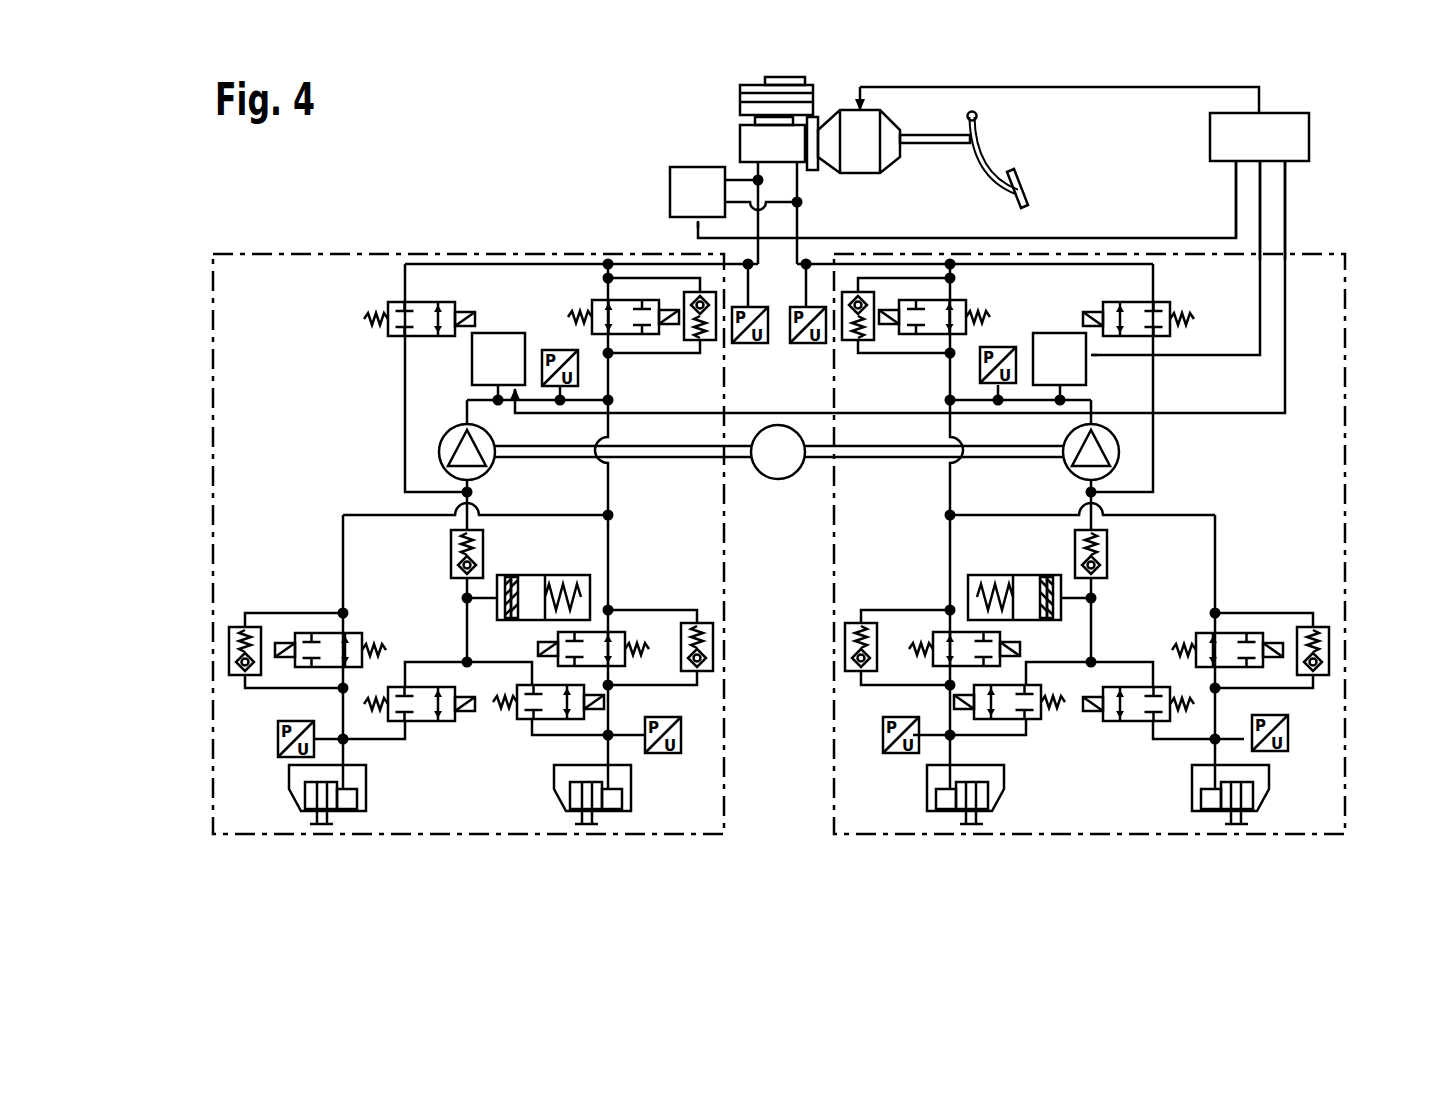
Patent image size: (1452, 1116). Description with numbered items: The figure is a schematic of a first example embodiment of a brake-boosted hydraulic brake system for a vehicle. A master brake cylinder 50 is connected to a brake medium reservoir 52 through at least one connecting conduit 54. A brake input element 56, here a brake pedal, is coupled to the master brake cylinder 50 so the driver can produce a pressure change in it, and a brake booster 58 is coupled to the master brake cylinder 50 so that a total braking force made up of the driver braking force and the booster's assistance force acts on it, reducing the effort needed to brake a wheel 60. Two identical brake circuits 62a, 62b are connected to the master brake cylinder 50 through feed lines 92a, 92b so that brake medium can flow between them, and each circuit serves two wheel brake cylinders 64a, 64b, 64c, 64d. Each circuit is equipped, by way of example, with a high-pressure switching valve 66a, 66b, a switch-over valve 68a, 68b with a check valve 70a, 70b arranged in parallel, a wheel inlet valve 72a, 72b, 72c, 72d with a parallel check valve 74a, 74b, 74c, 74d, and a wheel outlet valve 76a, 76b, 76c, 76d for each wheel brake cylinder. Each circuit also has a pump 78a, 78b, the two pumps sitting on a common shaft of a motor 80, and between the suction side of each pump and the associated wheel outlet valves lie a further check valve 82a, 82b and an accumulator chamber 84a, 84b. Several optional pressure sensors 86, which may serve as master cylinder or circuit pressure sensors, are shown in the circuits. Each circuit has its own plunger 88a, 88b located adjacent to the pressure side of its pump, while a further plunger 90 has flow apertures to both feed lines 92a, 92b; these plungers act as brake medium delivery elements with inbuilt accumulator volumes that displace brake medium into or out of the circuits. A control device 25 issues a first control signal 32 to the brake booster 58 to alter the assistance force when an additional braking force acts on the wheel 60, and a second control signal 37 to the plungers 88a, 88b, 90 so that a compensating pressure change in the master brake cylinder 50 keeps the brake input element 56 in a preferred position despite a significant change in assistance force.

The control device 25 is at (1309, 137).
The first control signal 32 is at (1078, 86).
The second control signal 37 is at (1236, 195).
The master brake cylinder 50 is at (745, 141).
The brake medium reservoir 52 is at (785, 77).
The connecting conduit 54 is at (755, 120).
The brake input element 56 is at (980, 138).
The brake booster 58 is at (888, 127).
The wheel 60 is at (1236, 850).
The brake circuit 62a is at (1345, 543).
The brake circuit 62b is at (213, 545).
The wheel brake cylinder 64a is at (1182, 791).
The wheel brake cylinder 64b is at (917, 791).
The wheel brake cylinder 64c is at (641, 791).
The wheel brake cylinder 64d is at (376, 791).
The high-pressure switching valve 66a is at (1170, 302).
The high-pressure switching valve 66b is at (388, 305).
The switch-over valve 68a is at (965, 302).
The switch-over valve 68b is at (595, 302).
The check valve 70a is at (850, 341).
The check valve 70b is at (708, 341).
The wheel inlet valve 72a is at (1233, 633).
The wheel inlet valve 72b is at (940, 632).
The wheel inlet valve 72c is at (620, 632).
The wheel inlet valve 72d is at (325, 633).
The check valve 74a is at (1329, 646).
The check valve 74b is at (845, 658).
The check valve 74c is at (713, 633).
The check valve 74d is at (229, 652).
The wheel outlet valve 76a is at (1135, 721).
The wheel outlet valve 76b is at (1042, 719).
The wheel outlet valve 76c is at (522, 719).
The wheel outlet valve 76d is at (425, 721).
The pump 78a is at (1100, 428).
The pump 78b is at (460, 428).
The motor 80 is at (778, 480).
The further check valve 82a is at (1107, 551).
The further check valve 82b is at (451, 557).
The accumulator chamber 84a is at (1027, 575).
The accumulator chamber 84b is at (545, 575).
The pressure sensor 86 is at (1308, 733).
The plunger 88a is at (1060, 333).
The plunger 88b is at (498, 333).
The further plunger 90 is at (670, 192).
The feed line 92a is at (797, 216).
The feed line 92b is at (760, 170).